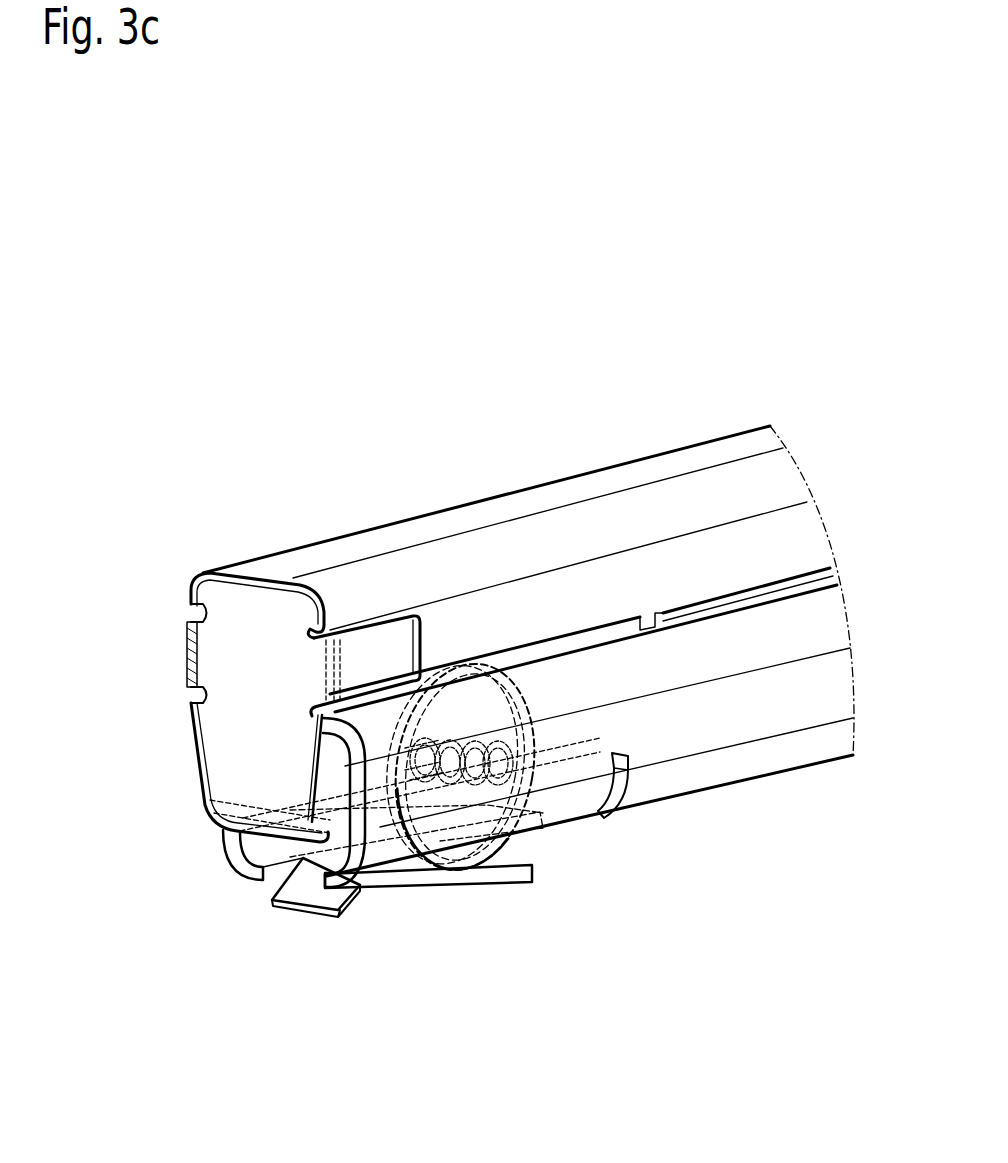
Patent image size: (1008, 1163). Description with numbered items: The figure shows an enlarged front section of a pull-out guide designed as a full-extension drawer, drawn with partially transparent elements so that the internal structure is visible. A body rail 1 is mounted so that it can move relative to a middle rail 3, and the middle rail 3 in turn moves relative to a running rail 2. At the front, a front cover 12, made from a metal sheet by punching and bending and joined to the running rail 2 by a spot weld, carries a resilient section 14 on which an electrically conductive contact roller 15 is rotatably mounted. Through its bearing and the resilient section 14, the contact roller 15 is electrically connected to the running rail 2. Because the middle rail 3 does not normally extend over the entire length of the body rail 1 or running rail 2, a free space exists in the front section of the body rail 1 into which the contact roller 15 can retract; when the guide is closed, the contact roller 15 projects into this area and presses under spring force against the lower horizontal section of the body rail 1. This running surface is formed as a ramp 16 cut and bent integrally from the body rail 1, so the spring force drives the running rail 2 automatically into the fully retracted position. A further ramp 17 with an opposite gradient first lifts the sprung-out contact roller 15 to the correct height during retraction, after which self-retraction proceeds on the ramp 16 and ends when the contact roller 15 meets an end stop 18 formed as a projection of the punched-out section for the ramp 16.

The body rail 1 is at (730, 752).
The running rail 2 is at (692, 502).
The middle rail 3 is at (827, 575).
The front cover 12 is at (220, 667).
The resilient section 14 is at (371, 790).
The contact roller 15 is at (455, 702).
The ramp 16 is at (500, 872).
The further ramp 17 is at (313, 890).
The end stop 18 is at (543, 828).